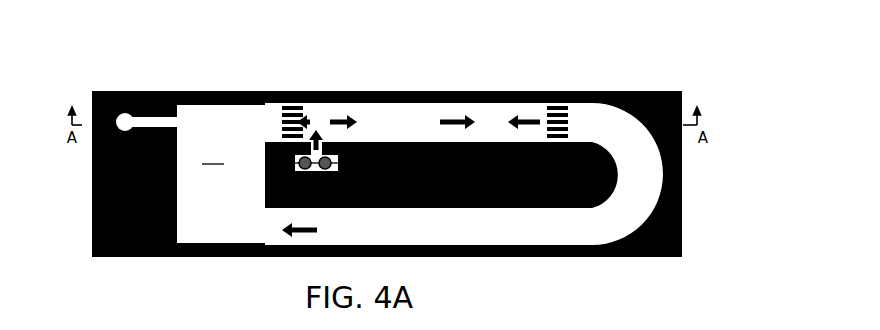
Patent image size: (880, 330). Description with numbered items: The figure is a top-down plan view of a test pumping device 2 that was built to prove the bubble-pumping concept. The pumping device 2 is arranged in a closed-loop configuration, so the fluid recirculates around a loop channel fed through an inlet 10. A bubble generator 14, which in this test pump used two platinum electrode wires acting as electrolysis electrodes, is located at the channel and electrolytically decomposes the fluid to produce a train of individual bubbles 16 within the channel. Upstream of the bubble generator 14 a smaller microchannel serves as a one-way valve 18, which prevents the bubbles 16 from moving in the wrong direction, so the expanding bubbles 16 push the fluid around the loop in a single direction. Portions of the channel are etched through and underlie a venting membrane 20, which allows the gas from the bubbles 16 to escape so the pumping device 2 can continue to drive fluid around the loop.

The pumping device 2 is at (711, 256).
The inlet 10 is at (117, 106).
The bubble generator 14 is at (353, 161).
The bubbles 16 is at (327, 93).
The one-way valve 18 is at (280, 100).
The venting membrane 20 is at (452, 99).